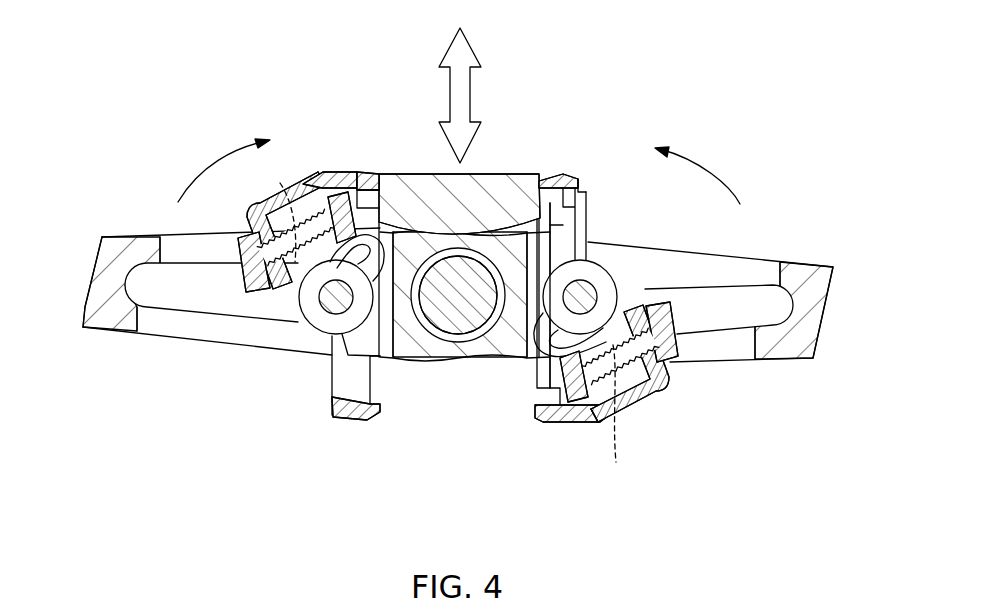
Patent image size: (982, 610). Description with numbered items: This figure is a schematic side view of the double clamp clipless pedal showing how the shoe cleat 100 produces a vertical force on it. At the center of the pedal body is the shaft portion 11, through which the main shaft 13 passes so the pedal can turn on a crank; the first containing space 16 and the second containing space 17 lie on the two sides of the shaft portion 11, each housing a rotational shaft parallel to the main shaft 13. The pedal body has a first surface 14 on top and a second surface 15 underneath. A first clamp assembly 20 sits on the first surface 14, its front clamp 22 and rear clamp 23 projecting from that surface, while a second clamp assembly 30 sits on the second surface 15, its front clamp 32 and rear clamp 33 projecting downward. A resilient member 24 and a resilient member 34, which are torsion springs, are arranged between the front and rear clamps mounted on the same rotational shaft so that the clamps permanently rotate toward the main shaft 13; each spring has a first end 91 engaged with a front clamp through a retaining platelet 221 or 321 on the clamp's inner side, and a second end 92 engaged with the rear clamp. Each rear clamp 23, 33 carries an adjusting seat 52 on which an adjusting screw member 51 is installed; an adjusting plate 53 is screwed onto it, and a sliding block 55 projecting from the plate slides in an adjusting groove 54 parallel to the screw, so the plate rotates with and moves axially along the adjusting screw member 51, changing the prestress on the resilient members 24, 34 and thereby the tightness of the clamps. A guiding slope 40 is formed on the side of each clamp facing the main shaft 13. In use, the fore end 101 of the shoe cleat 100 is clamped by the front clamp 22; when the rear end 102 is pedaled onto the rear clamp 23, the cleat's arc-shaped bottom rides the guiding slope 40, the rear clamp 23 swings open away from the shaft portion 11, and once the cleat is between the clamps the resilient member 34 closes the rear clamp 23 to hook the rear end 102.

The shaft portion 11 is at (492, 326).
The main shaft 13 is at (453, 314).
The first surface 14 is at (140, 233).
The second surface 15 is at (175, 342).
The first containing space 16 is at (726, 323).
The second containing space 17 is at (168, 300).
The first clamp assembly 20 is at (311, 128).
The front clamp 22 is at (577, 177).
The rear clamp 23 is at (333, 172).
The resilient member 24 is at (598, 280).
The second clamp assembly 30 is at (496, 359).
The front clamp 32 is at (350, 421).
The rear clamp 33 is at (545, 424).
The resilient member 34 is at (323, 318).
The guiding slope 40 is at (373, 173).
The adjusting screw member 51 is at (308, 249).
The adjusting seat 52 is at (274, 289).
The adjusting plate 53 is at (582, 403).
The adjusting groove 54 is at (275, 200).
The sliding block 55 is at (308, 180).
The first end 91 is at (350, 354).
The second end 92 is at (281, 189).
The shoe cleat 100 is at (512, 174).
The fore end 101 is at (578, 193).
The rear end 102 is at (357, 188).
The retaining platelet 221 is at (552, 226).
The retaining platelet 321 is at (373, 359).